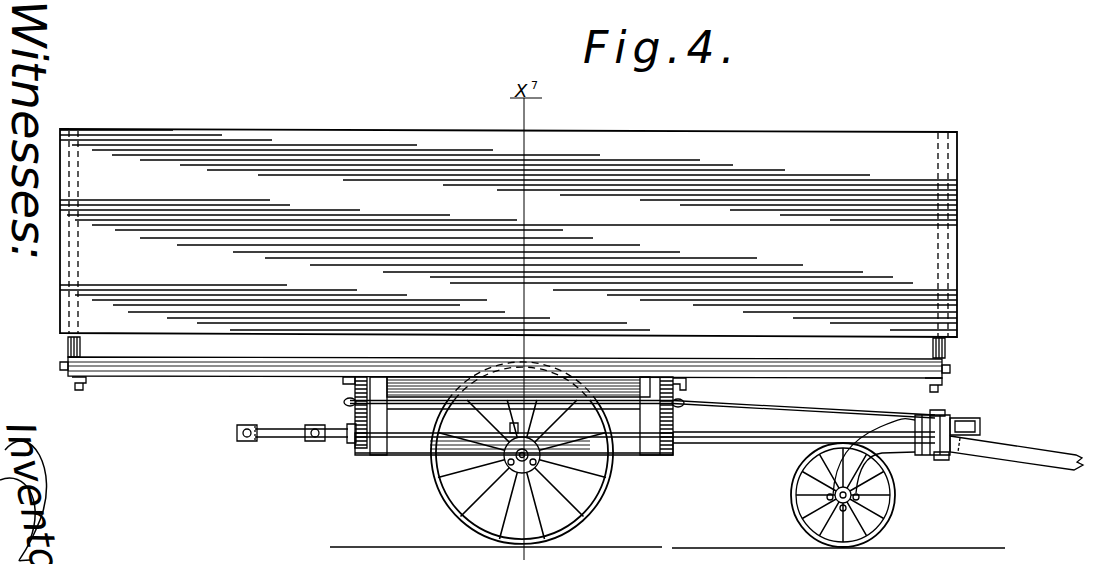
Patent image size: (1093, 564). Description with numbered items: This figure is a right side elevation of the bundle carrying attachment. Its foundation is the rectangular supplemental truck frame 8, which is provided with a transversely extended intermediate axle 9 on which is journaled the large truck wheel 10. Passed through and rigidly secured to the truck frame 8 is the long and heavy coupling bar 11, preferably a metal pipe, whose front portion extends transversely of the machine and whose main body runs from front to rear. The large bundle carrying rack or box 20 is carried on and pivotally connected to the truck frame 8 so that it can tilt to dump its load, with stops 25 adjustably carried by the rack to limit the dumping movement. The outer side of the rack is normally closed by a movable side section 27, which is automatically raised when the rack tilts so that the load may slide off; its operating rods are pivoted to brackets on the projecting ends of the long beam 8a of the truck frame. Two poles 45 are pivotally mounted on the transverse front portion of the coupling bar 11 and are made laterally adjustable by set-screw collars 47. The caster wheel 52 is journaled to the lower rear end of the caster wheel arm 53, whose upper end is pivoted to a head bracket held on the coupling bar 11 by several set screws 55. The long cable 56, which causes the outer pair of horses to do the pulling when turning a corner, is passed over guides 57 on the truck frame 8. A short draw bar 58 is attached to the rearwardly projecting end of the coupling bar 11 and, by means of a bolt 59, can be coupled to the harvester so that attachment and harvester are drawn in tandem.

The supplemental truck frame 8 is at (650, 444).
The long beam 8a is at (683, 377).
The intermediate axle 9 is at (510, 467).
The truck wheel 10 is at (608, 487).
The coupling bar 11 is at (725, 438).
The bundle carrying rack 20 is at (870, 366).
The stops 25 is at (355, 443).
The movable side section 27 is at (508, 233).
The poles 45 is at (1013, 452).
The collars 47 is at (960, 420).
The caster wheel 52 is at (896, 515).
The caster wheel arm 53 is at (893, 450).
The set screws 55 is at (957, 467).
The cable 56 is at (780, 410).
The guides 57 is at (682, 403).
The draw bar 58 is at (285, 441).
The bolt 59 is at (243, 441).